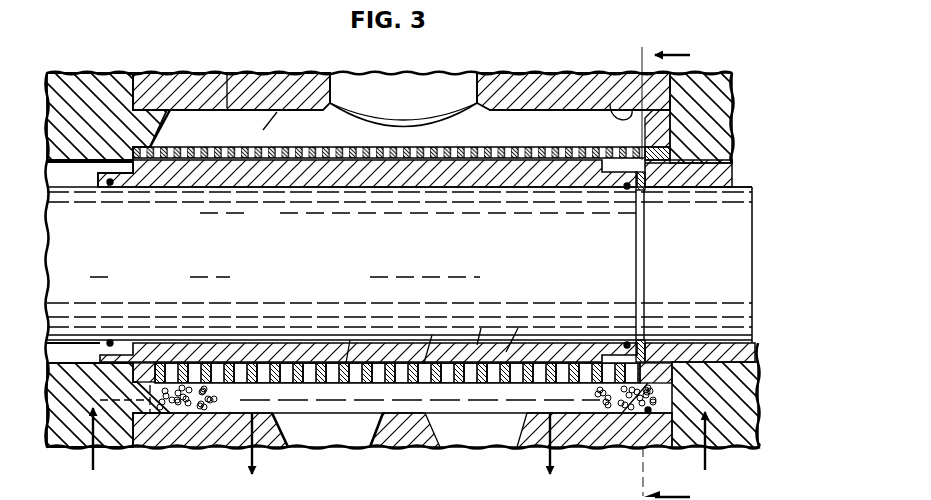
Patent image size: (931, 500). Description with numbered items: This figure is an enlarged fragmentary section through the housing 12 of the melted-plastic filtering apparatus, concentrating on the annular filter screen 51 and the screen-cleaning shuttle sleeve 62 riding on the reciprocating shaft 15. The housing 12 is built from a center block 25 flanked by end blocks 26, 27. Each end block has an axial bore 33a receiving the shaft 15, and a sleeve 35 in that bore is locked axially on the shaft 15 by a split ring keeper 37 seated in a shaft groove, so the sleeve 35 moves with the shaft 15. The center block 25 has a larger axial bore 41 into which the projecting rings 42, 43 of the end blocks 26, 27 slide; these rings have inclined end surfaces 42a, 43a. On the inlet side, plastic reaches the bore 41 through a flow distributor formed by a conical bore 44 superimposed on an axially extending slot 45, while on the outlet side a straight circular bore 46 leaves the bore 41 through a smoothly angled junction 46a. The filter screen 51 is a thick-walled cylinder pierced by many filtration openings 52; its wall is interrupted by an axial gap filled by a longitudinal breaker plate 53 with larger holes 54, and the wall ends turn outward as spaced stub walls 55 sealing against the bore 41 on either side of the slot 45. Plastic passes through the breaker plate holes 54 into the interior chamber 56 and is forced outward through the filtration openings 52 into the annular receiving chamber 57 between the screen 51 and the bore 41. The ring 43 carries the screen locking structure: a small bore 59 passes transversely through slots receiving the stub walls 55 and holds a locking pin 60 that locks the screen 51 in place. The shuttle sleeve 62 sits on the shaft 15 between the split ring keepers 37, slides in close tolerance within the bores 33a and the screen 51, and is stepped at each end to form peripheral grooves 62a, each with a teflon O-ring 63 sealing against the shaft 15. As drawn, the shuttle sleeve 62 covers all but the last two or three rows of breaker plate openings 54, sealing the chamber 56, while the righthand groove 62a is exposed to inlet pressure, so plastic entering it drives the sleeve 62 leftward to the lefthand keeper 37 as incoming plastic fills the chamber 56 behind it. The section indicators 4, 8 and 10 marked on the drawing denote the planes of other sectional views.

The section line 10-10 / apparatus 10 is at (690, 47).
The housing 12 is at (518, 70).
The reciprocating shaft 15 is at (350, 294).
The center block 25 is at (549, 76).
The end block 26 is at (74, 72).
The end block 27 is at (728, 86).
The bore 33a is at (110, 184).
The sleeve 35 is at (707, 186).
The split ring keeper 37 is at (638, 191).
The axial bore 41 is at (230, 115).
The ring 42 is at (170, 128).
The inclined end surface 42a is at (231, 91).
The ring 43 is at (645, 125).
The inclined end surface 43a is at (607, 102).
The conical bore 44 is at (403, 437).
The slot 45 is at (322, 440).
The straight circular bore 46 is at (396, 92).
The angled junction 46a is at (402, 127).
The filter screen 51 is at (511, 143).
The filtration openings 52 is at (445, 160).
The longitudinal breaker plate 53 is at (356, 342).
The filtration openings 54 is at (431, 339).
The stub walls 55 is at (474, 404).
The interior chamber 56 is at (481, 326).
The annular receiving chamber 57 is at (277, 106).
The small bore 59 is at (649, 410).
The locking pin 60 is at (605, 420).
The shuttle sleeve 62 is at (516, 329).
The peripheral grooves 62a is at (113, 366).
The teflon O-ring 63 is at (110, 343).
The section line 4- 4 is at (400, 445).
The section line 8- 8 is at (400, 449).